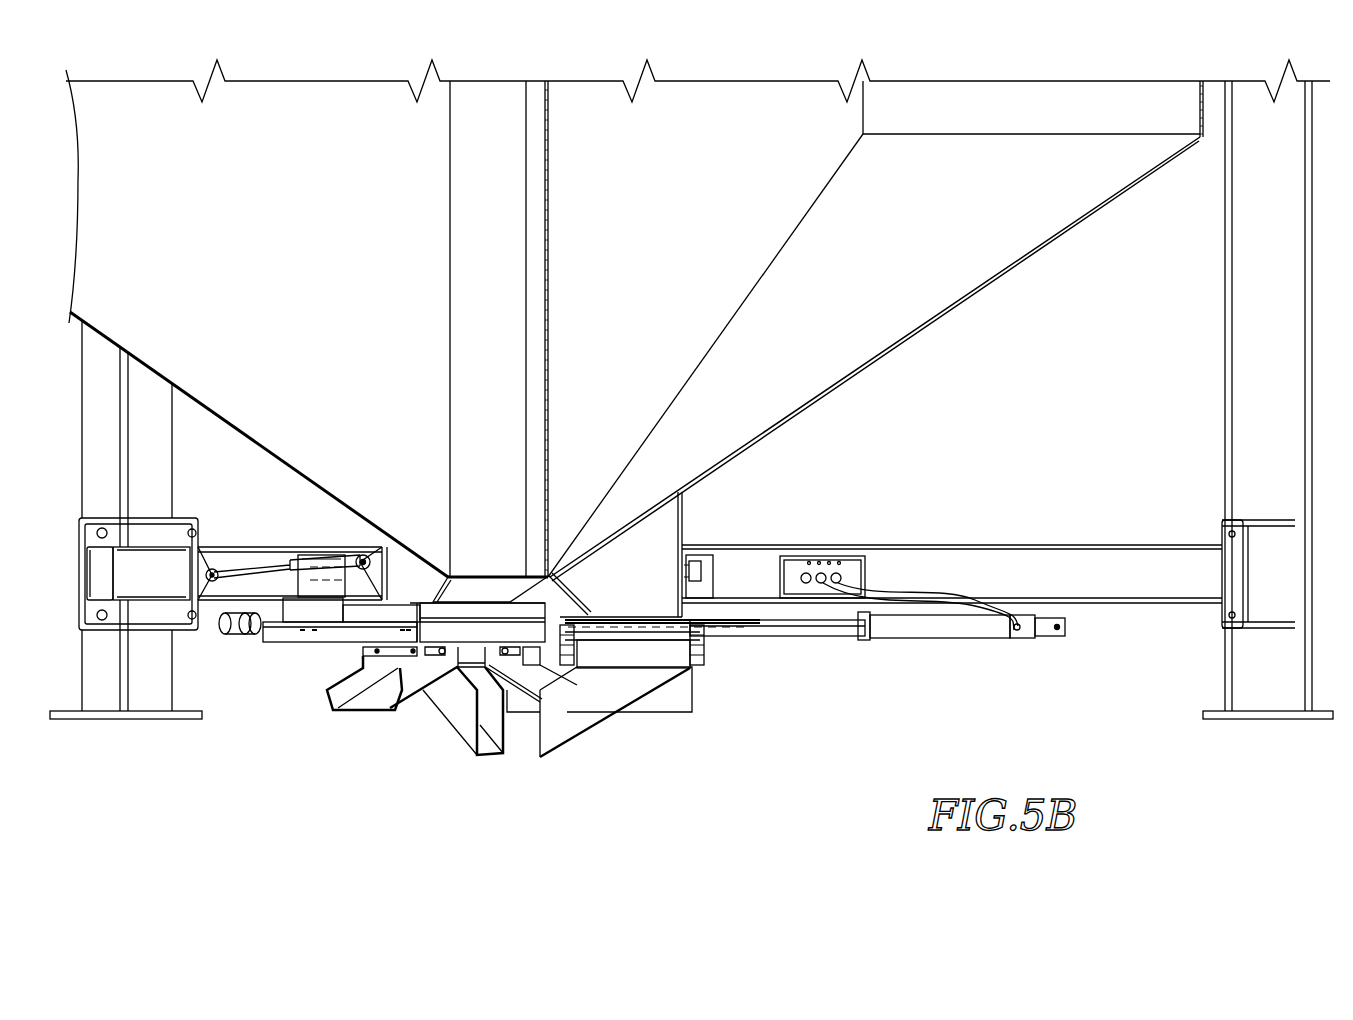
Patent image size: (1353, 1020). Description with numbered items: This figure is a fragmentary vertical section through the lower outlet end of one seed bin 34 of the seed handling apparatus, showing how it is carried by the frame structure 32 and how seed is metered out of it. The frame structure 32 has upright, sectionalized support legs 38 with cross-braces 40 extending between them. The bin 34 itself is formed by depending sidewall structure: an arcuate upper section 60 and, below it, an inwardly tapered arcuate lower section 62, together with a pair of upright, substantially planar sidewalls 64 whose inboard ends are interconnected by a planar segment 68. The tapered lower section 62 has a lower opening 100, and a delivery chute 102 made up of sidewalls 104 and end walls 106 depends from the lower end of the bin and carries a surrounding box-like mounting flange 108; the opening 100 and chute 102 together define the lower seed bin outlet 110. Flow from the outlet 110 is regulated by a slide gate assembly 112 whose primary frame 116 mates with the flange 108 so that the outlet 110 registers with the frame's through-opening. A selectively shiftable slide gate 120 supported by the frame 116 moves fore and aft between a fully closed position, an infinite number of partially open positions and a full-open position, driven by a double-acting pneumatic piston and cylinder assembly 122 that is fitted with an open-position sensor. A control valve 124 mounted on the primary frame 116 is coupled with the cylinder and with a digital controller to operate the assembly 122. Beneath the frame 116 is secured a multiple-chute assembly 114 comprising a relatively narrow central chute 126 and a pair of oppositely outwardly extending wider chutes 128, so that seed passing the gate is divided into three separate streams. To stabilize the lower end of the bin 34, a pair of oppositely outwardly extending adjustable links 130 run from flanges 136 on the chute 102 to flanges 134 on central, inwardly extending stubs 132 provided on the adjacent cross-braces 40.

The frame structure 32 is at (1210, 668).
The seed bin 34 is at (945, 347).
The support leg 38 is at (153, 422).
The cross-brace 40 is at (87, 560).
The arcuate upper section 60 is at (1203, 108).
The inwardly tapered arcuate lower section 62 is at (978, 290).
The sidewall 64 is at (527, 317).
The planar segment 68 is at (482, 106).
The lower opening 100 is at (565, 572).
The delivery chute 102 is at (688, 518).
The sidewall 104 is at (405, 578).
The end wall 106 is at (470, 590).
The mounting flange 108 is at (705, 608).
The lower seed bin outlet 110 is at (650, 650).
The slide gate assembly 112 is at (320, 650).
The multiple-chute assembly 114 is at (420, 738).
The primary frame 116 is at (290, 642).
The slide gate 120 is at (638, 620).
The pneumatic piston and cylinder assembly 122 is at (250, 635).
The control valve 124 is at (870, 572).
The central chute 126 is at (493, 756).
The wider chute 128 is at (375, 705).
The adjustable link 130 is at (285, 560).
The stub 132 is at (143, 595).
The flange 134 is at (203, 560).
The flange 136 is at (373, 530).